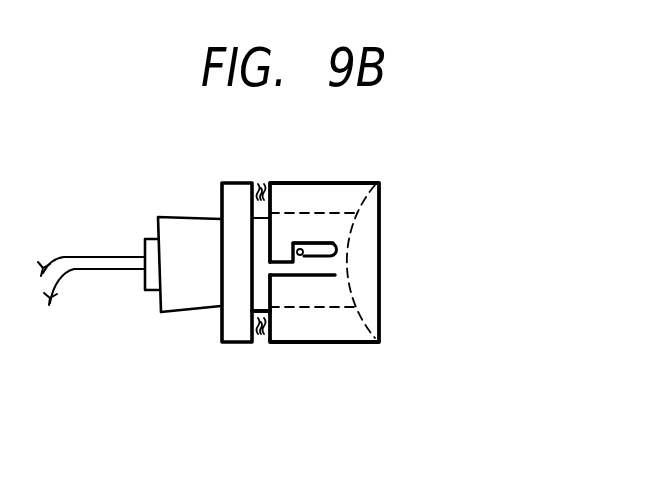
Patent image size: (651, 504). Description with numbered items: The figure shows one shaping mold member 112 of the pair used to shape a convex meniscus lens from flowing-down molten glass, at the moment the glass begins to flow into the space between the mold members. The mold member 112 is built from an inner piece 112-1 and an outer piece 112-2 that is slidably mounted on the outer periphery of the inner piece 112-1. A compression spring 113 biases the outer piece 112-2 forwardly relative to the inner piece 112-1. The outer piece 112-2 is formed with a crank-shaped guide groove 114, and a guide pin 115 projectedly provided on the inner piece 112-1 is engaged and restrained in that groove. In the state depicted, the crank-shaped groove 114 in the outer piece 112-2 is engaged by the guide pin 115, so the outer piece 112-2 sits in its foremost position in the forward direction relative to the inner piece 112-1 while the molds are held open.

The shaping mold member 112 is at (227, 400).
The inner piece 112-1 is at (262, 295).
The outer piece 112-2 is at (352, 333).
The compression spring 113 is at (262, 180).
The crank-shaped guide groove 114 is at (296, 266).
The guide pin 115 is at (313, 243).